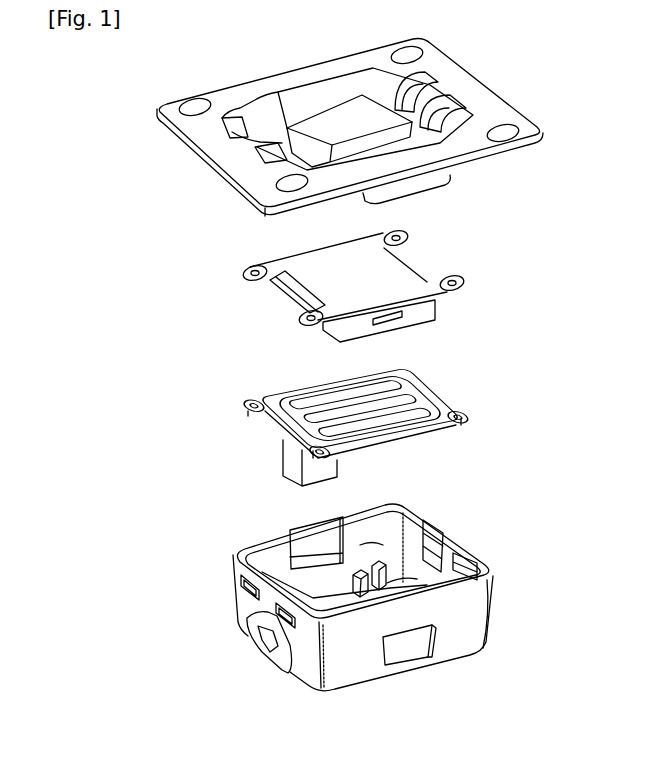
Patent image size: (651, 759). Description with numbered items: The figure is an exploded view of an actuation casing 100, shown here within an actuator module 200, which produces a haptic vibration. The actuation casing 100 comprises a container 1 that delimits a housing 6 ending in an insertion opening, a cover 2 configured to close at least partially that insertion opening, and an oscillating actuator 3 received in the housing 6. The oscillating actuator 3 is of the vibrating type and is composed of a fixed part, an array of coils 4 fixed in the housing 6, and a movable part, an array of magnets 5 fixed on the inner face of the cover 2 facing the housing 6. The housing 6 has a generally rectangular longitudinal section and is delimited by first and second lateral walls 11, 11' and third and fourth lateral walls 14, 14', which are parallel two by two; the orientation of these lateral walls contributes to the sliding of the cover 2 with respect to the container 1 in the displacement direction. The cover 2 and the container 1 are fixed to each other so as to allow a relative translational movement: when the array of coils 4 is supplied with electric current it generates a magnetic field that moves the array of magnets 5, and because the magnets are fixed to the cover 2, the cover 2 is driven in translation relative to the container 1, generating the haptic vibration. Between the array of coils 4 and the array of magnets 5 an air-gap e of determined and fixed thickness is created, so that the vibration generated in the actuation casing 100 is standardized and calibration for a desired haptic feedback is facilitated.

The container 1 is at (338, 583).
The cover 2 is at (194, 174).
The oscillating actuator 3 is at (480, 228).
The array of coils 4 is at (235, 396).
The array of magnets 5 is at (250, 306).
The housing 6 is at (241, 523).
The first lateral wall 11 is at (374, 510).
The second lateral wall 11' is at (456, 641).
The third lateral wall 14 is at (476, 549).
The fourth lateral wall 14' is at (244, 624).
The actuation casing 100 is at (521, 493).
The actuator module 200 is at (116, 87).
The air-gap e is at (355, 348).